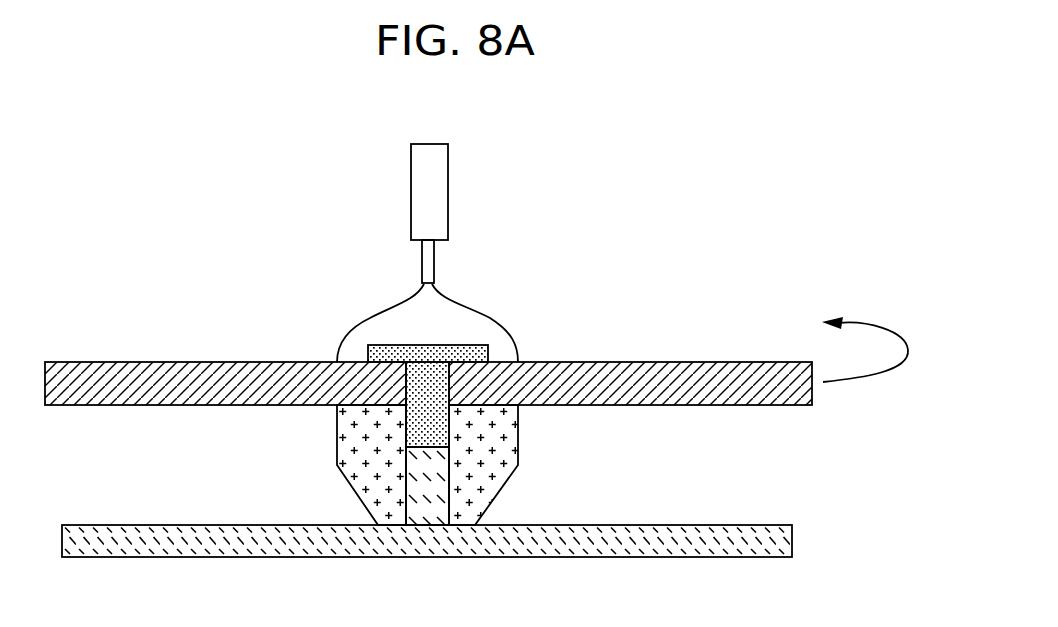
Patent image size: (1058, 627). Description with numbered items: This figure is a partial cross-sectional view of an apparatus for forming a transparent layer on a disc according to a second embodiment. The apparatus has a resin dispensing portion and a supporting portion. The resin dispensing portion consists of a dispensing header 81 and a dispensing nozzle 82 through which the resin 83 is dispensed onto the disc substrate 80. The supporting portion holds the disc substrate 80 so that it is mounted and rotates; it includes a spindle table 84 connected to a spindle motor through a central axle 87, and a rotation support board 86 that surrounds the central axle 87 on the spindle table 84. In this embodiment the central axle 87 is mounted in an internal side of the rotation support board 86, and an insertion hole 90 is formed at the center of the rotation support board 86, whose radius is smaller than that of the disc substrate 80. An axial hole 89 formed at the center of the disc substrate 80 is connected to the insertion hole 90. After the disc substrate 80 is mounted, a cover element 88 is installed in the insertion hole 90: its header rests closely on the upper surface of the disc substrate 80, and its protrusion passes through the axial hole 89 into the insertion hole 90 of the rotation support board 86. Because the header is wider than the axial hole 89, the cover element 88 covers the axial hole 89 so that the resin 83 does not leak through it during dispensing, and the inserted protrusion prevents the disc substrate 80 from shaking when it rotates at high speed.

The disc substrate 80 is at (92, 373).
The dispensing header 81 is at (448, 175).
The dispensing nozzle 82 is at (435, 260).
The resin 83 is at (507, 350).
The spindle table 84 is at (782, 541).
The rotation support board 86 is at (505, 445).
The central axle 87 is at (435, 492).
The cover element 88 is at (377, 343).
The axial hole 89 is at (450, 377).
The insertion hole 90 is at (412, 430).